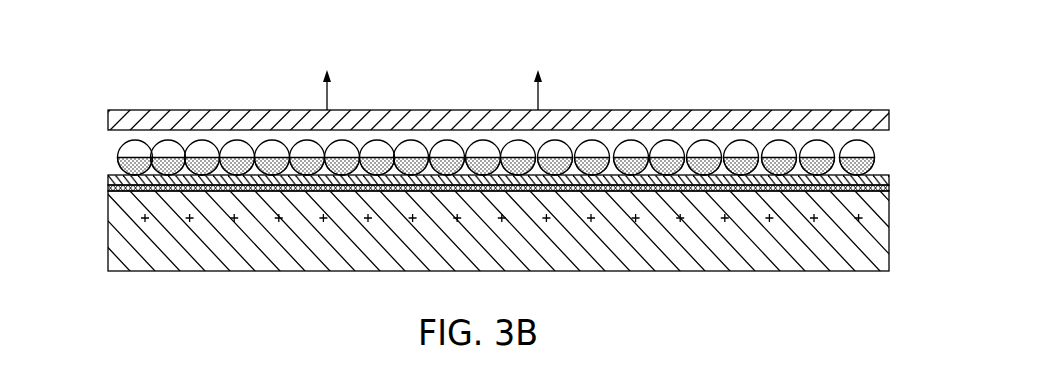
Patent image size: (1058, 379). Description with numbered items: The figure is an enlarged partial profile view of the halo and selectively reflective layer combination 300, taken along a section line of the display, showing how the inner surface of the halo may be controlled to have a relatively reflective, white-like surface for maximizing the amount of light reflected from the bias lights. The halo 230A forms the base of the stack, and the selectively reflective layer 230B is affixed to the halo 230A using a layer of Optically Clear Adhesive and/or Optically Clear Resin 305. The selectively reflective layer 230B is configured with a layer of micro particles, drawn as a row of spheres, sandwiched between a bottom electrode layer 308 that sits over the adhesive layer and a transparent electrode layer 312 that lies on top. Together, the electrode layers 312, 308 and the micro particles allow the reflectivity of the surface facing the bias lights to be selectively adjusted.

The halo and selectively reflective layer combination 300 is at (142, 34).
The transparent electrode layer 312 is at (880, 122).
The selectively reflective layer 230B is at (118, 150).
The bottom electrode layer 308 is at (889, 178).
The layer of Optically Clear Adhesive and/or Optically Clear Resin 305 is at (889, 188).
The halo 230A is at (876, 222).